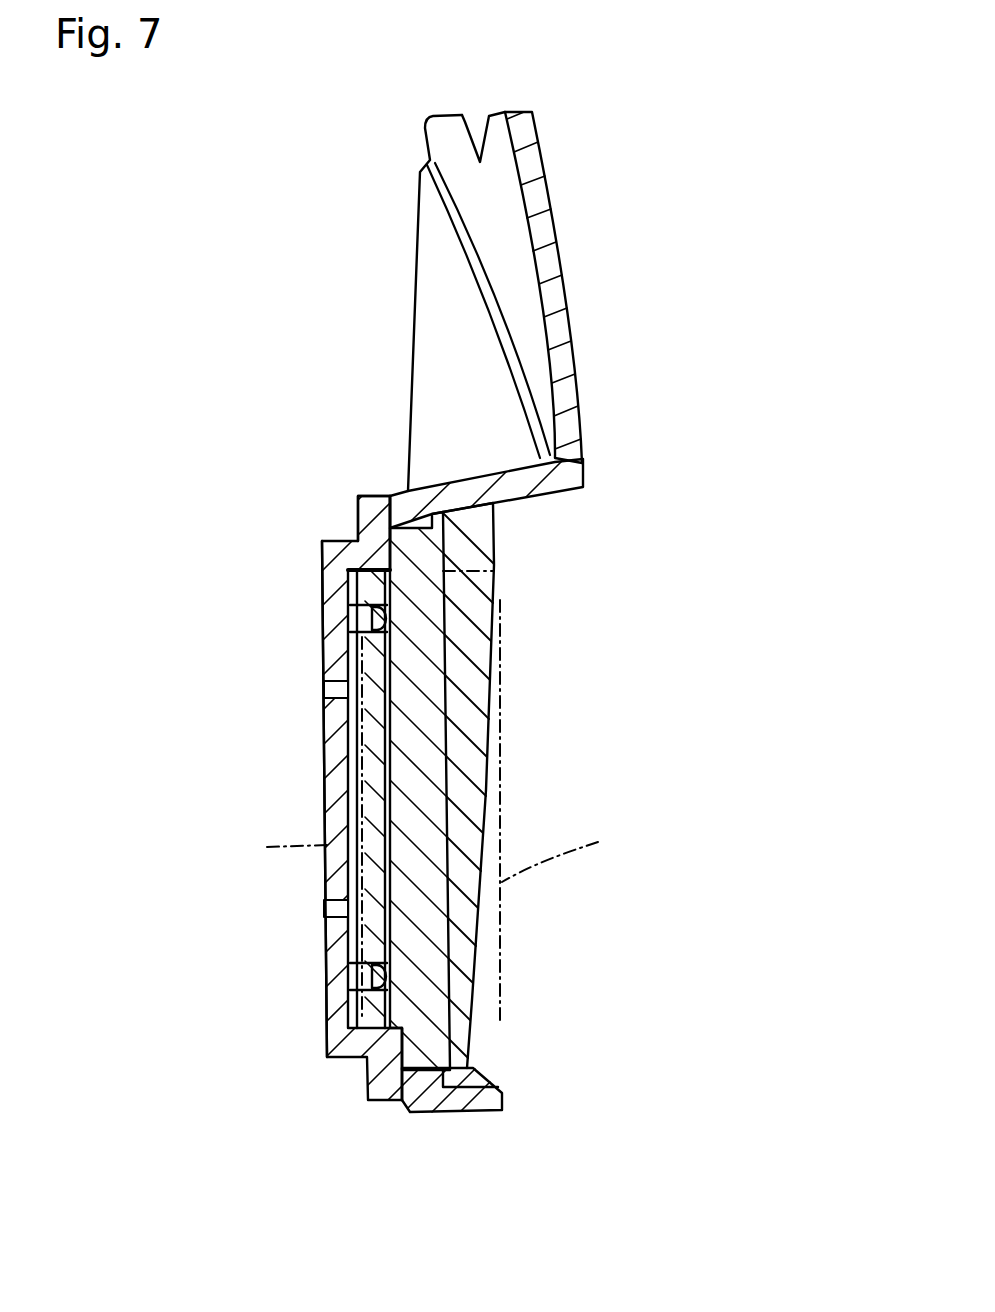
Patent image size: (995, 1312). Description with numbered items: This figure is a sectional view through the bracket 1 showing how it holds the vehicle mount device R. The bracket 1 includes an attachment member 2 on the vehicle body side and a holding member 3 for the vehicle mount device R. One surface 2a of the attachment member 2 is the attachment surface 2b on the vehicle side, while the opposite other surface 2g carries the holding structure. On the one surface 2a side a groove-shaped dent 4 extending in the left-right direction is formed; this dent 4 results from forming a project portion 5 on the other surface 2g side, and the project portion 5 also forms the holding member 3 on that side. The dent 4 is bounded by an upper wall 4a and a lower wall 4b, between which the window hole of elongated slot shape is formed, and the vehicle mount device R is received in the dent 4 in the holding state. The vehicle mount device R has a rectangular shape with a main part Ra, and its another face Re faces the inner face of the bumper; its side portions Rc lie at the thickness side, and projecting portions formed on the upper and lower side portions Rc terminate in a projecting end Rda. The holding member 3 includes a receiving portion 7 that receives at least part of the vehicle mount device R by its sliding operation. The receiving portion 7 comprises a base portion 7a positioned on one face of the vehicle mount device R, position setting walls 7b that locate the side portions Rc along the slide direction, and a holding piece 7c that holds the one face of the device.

The bracket 1 is at (572, 118).
The attachment member 2 is at (563, 297).
The one surface 2a is at (543, 287).
The attachment surface 2b is at (543, 287).
The other surface 2g is at (438, 255).
The holding member 3 is at (280, 540).
The dent 4 is at (538, 688).
The upper wall 4a is at (540, 497).
The lower wall 4b is at (477, 1077).
The project portion 5 is at (322, 594).
The receiving portion 7 is at (266, 786).
The base portion 7a is at (325, 960).
The position setting wall 7b is at (362, 556).
The holding piece 7c is at (324, 772).
The vehicle mount device R is at (597, 850).
The main part Ra is at (597, 850).
The side portion Rc is at (493, 570).
The projecting end Rda is at (396, 494).
The another face Re is at (267, 847).